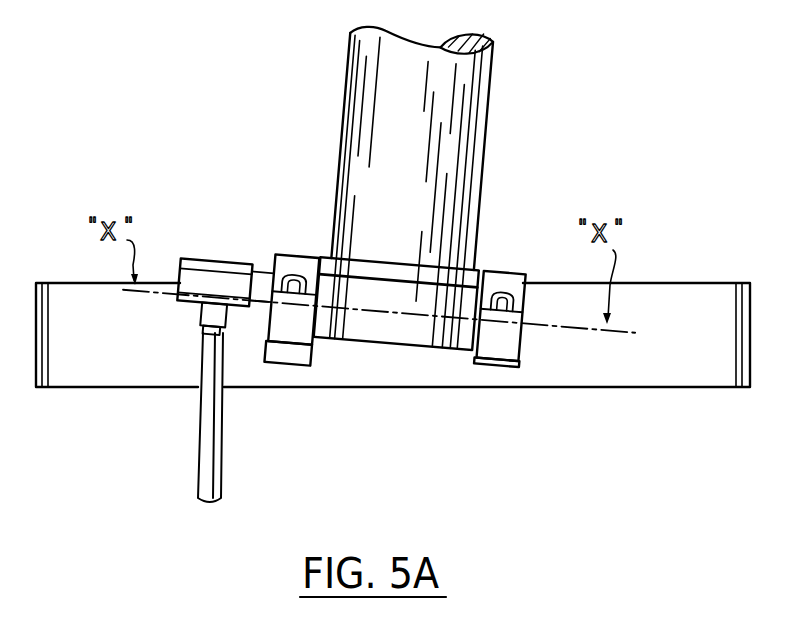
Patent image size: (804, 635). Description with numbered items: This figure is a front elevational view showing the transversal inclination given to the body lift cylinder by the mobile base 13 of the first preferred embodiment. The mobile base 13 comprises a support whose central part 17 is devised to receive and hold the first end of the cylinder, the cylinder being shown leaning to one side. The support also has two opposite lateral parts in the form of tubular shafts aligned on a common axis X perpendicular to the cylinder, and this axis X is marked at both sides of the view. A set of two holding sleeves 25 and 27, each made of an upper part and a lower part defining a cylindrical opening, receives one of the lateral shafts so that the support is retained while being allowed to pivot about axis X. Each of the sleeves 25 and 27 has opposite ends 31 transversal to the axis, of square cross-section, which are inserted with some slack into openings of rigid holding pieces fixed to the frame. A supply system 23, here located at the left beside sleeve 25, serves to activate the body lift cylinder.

The mobile base 13 is at (496, 250).
The central part 17 is at (407, 328).
The supply system 23 is at (200, 258).
The holding sleeve 25 is at (296, 256).
The holding sleeve 27 is at (516, 274).
The opposite end 31 is at (290, 338).